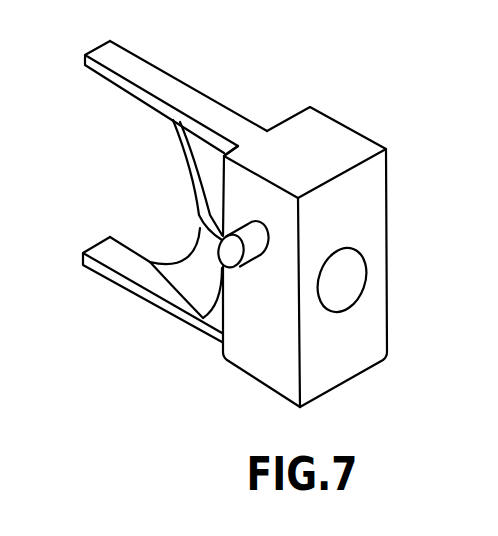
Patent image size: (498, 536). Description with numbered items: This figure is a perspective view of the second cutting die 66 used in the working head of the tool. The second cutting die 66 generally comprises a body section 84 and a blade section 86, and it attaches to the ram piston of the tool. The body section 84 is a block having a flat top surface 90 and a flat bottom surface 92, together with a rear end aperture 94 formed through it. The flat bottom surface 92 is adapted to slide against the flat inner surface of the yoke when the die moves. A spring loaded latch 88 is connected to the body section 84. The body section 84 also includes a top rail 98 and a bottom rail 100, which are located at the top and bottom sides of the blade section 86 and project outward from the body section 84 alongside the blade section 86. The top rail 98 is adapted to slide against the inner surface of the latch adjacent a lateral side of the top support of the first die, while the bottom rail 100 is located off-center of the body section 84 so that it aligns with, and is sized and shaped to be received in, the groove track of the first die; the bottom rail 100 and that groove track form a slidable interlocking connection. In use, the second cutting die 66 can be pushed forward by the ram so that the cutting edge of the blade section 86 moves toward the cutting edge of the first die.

The second cutting die 66 is at (332, 240).
The body section 84 is at (388, 198).
The blade section 86 is at (186, 167).
The spring loaded latch 88 is at (220, 238).
The flat top surface 90 is at (310, 118).
The flat bottom surface 92 is at (357, 380).
The rear end aperture 94 is at (353, 280).
The top rail 98 is at (135, 58).
The bottom rail 100 is at (97, 270).